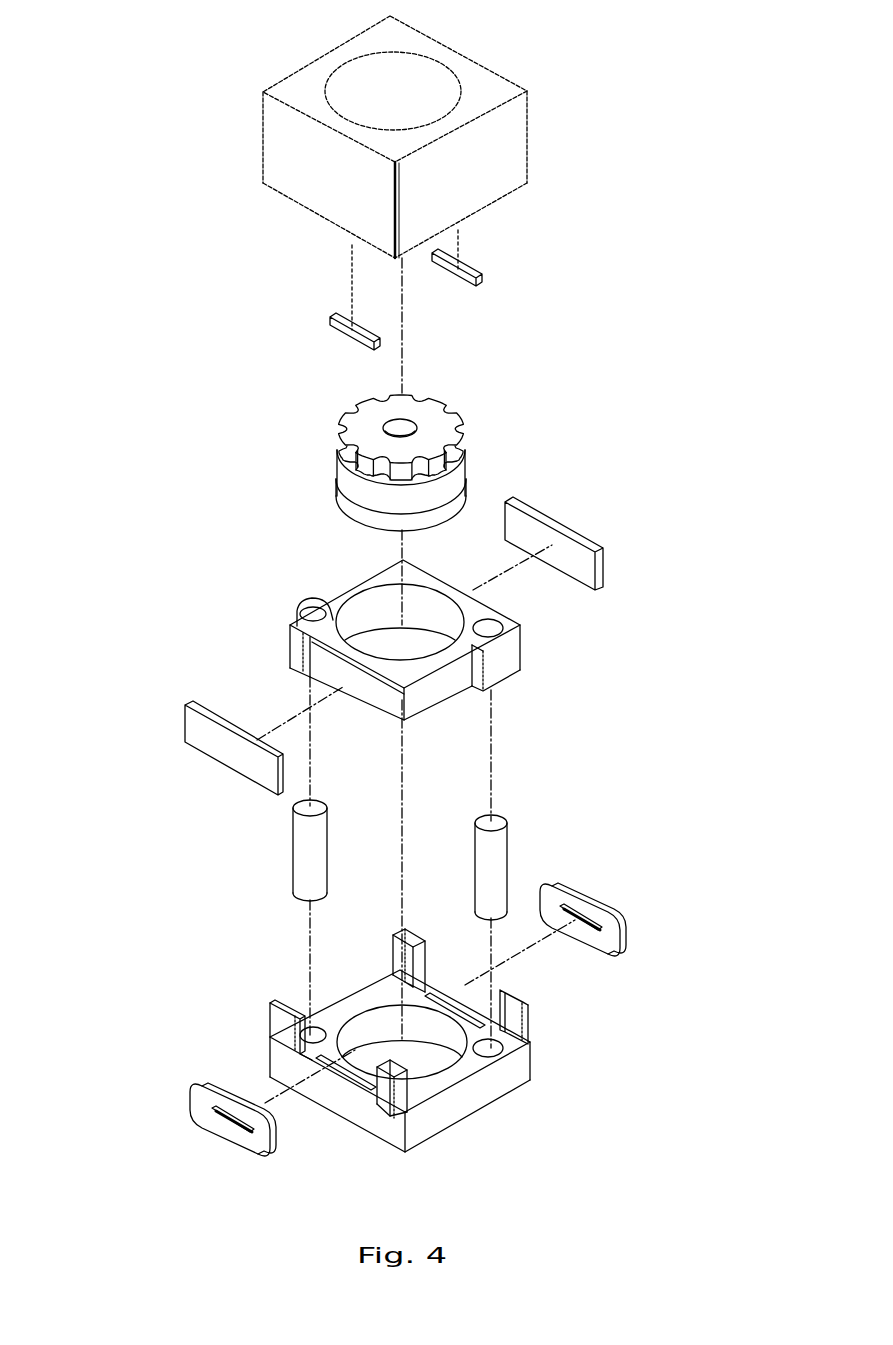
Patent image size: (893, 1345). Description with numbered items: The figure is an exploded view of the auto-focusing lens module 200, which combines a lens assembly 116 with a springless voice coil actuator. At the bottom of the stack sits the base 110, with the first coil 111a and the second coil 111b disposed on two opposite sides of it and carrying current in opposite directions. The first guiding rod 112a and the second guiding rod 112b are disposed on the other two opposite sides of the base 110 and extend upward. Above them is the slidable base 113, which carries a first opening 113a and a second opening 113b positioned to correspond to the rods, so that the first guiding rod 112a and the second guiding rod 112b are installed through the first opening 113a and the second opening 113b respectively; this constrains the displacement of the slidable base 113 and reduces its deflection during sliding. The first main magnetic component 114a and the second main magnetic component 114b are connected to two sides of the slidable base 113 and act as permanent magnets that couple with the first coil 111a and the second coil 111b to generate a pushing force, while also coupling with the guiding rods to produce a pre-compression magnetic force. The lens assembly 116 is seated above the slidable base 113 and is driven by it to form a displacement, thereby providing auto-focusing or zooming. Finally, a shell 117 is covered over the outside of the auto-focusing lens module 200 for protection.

The auto-focusing lens module 200 is at (122, 27).
The shell 117 is at (263, 141).
The lens assembly 116 is at (337, 430).
The slidable base 113 is at (335, 605).
The first opening 113a is at (313, 620).
The second opening 113b is at (490, 628).
The first main magnetic component 114a is at (190, 730).
The second main magnetic component 114b is at (603, 562).
The first guiding rod 112a is at (293, 853).
The second guiding rod 112b is at (500, 843).
The first coil 111a is at (203, 1110).
The second coil 111b is at (625, 943).
The base 110 is at (473, 1100).